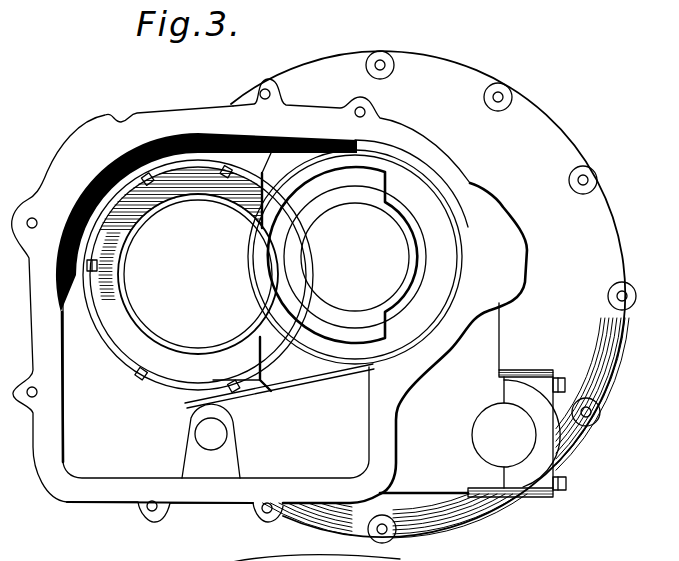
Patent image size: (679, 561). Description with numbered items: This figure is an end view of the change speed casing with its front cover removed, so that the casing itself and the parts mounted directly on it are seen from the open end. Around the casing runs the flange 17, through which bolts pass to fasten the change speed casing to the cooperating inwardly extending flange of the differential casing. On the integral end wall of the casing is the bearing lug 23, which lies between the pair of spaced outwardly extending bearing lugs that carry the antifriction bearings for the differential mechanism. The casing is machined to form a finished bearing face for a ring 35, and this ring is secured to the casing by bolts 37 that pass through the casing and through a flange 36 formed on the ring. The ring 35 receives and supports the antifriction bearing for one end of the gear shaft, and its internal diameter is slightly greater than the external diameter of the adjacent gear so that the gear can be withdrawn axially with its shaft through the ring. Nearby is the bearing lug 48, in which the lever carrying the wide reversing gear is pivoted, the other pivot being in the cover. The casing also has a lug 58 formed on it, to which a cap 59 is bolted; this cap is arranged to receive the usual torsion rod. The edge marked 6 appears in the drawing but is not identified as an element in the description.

The flange 17 is at (607, 232).
The bearing lug 23 is at (412, 258).
The ring 35 is at (174, 352).
The flange 36 is at (93, 325).
The bolts 37 is at (100, 266).
The bearing lug 48 is at (228, 437).
The lug 58 is at (455, 490).
The cap 59 is at (520, 372).
The crankcase 6 is at (282, 557).